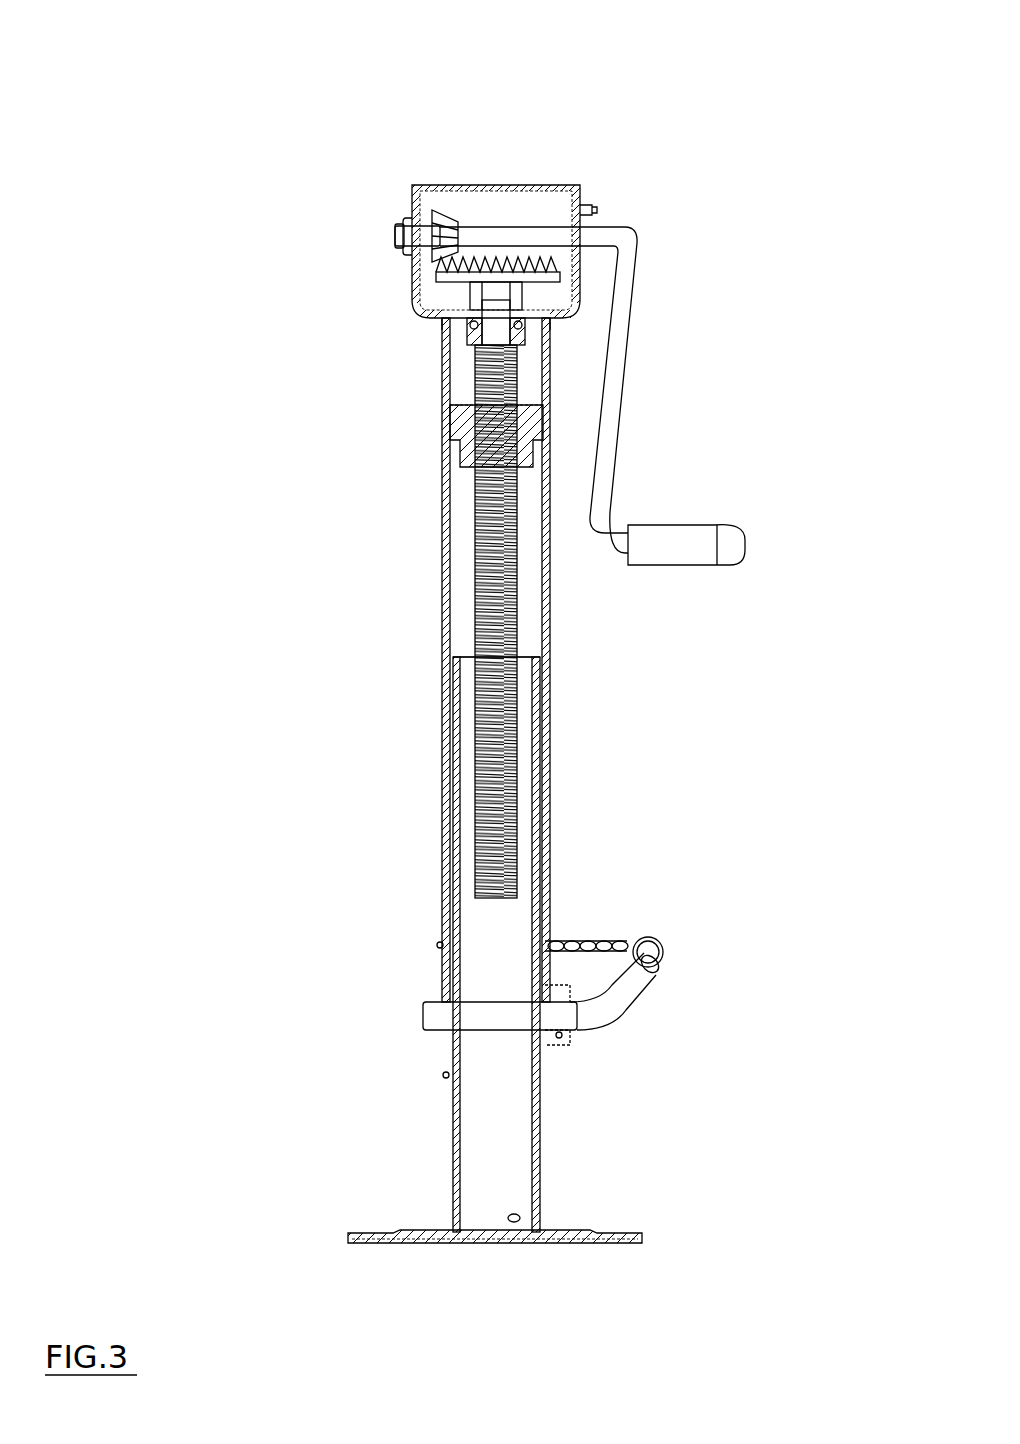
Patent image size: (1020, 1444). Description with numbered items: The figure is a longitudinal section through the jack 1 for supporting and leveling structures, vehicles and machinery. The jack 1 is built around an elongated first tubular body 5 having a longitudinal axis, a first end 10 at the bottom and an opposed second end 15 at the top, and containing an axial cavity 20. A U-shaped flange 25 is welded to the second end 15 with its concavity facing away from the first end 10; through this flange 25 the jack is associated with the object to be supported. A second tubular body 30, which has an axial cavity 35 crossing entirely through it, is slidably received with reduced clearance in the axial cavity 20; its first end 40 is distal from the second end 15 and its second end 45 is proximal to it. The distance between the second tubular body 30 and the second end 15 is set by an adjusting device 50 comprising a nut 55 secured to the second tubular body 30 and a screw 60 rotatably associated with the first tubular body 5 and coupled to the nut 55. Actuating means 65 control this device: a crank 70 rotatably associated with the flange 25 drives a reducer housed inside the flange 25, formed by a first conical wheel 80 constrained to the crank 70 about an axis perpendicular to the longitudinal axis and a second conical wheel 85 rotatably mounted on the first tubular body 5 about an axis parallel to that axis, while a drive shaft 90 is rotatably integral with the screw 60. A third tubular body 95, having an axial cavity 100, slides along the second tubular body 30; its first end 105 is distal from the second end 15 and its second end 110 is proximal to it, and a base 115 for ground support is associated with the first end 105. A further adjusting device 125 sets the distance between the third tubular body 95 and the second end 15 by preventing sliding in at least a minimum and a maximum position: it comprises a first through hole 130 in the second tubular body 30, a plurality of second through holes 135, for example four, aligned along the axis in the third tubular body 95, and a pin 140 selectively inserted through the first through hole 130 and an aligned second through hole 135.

The jack 1 is at (142, 122).
The first tubular body 5 is at (442, 548).
The first end 10 is at (440, 968).
The second end 15 is at (442, 322).
The axial cavity 20 is at (460, 383).
The flange 25 is at (412, 210).
The second tubular body 30 is at (447, 810).
The axial cavity 35 is at (526, 590).
The first end 40 is at (446, 1075).
The second end 45 is at (455, 423).
The adjusting device 50 is at (572, 432).
The nut 55 is at (538, 400).
The screw 60 is at (532, 356).
The actuating means 65 is at (380, 233).
The crank 70 is at (630, 236).
The first conical wheel 80 is at (448, 212).
The second conical wheel 85 is at (512, 262).
The drive shaft 90 is at (496, 322).
The third tubular body 95 is at (455, 1185).
The axial cavity 100 is at (490, 1205).
The first end 105 is at (544, 1218).
The second end 110 is at (540, 660).
The base 115 is at (618, 1244).
The adjusting device 125 is at (696, 946).
The first through hole 130 is at (548, 1036).
The second through holes 135 is at (455, 1032).
The pin 140 is at (660, 978).